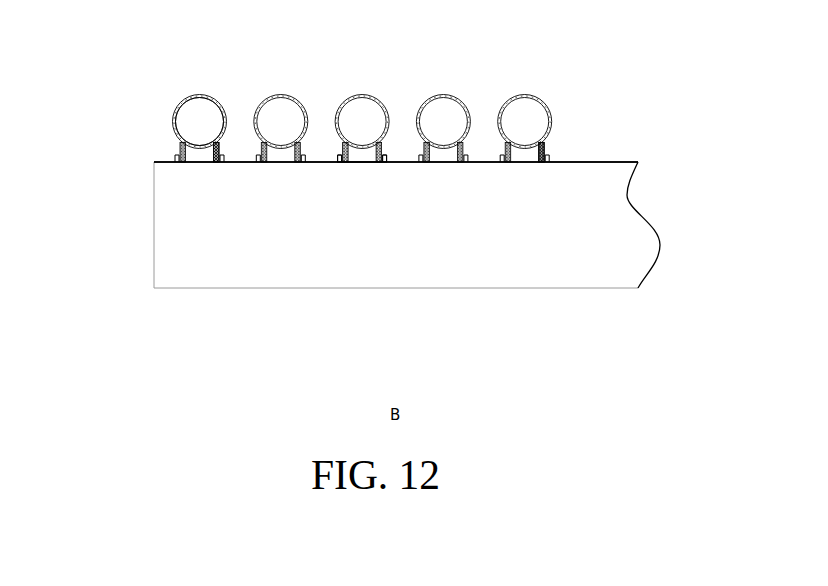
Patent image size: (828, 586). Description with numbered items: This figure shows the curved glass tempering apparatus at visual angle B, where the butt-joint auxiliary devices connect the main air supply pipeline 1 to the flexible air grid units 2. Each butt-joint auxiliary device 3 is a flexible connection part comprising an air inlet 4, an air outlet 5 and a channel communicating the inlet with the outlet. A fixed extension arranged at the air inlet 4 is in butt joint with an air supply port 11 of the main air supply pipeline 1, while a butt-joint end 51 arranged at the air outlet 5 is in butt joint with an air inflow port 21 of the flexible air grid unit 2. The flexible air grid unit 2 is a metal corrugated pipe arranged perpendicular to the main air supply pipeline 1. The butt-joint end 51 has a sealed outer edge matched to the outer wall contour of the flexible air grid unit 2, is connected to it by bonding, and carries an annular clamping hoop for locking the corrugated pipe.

The main air supply pipeline 1 is at (179, 270).
The air supply port 11 is at (190, 172).
The flexible air grid unit 2 is at (176, 96).
The air inflow port 21 is at (205, 134).
The butt-joint auxiliary device 3 is at (229, 171).
The air inlet 4 is at (371, 169).
The air outlet 5 is at (368, 140).
The butt-joint end 51 is at (554, 134).